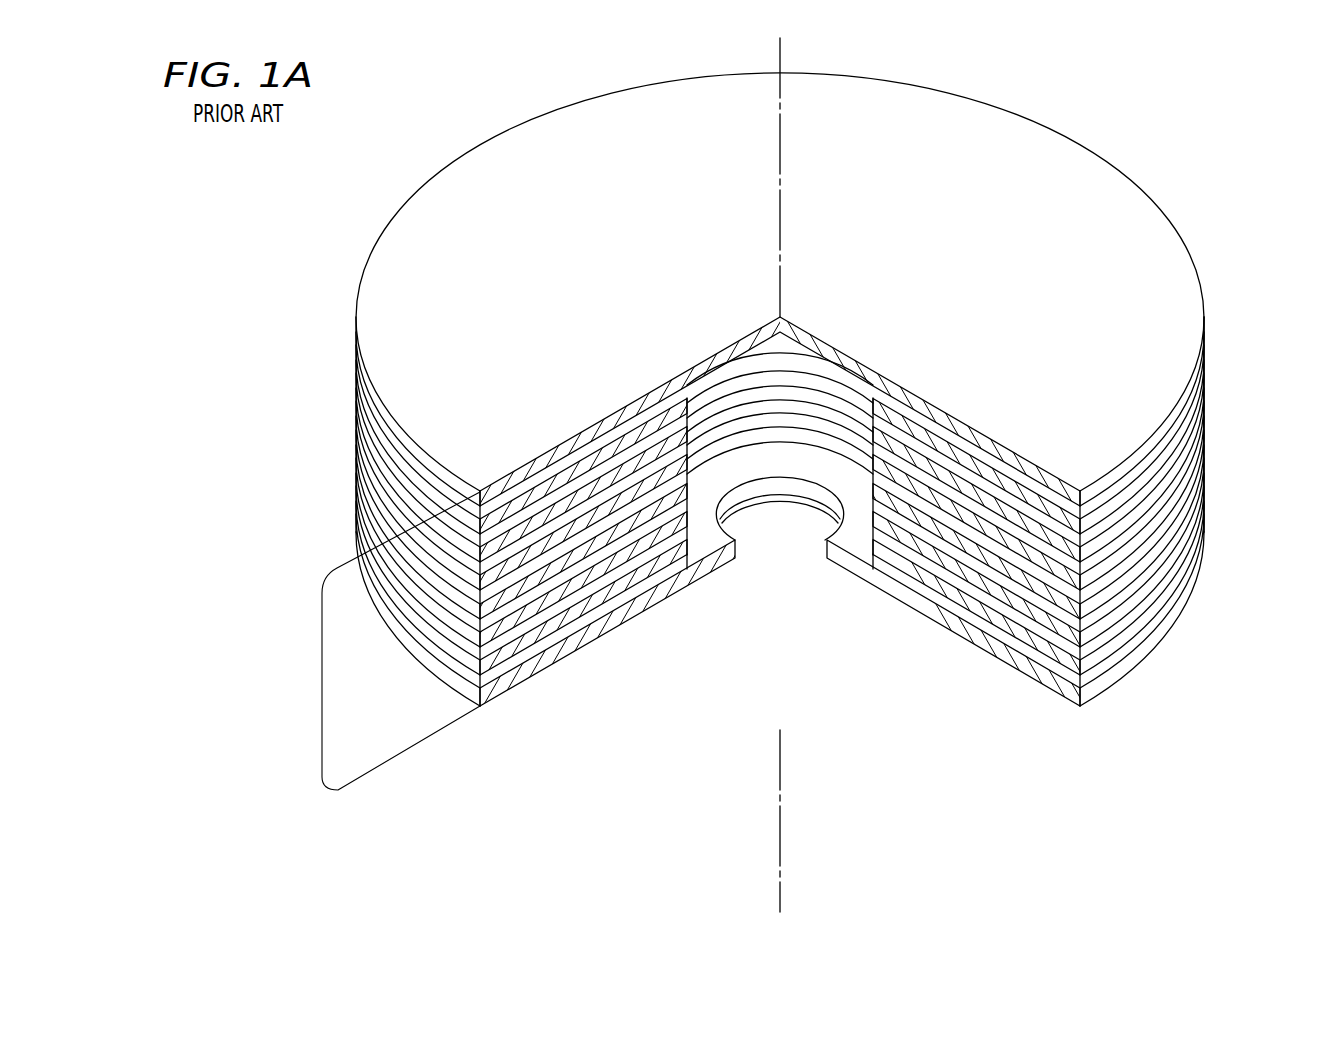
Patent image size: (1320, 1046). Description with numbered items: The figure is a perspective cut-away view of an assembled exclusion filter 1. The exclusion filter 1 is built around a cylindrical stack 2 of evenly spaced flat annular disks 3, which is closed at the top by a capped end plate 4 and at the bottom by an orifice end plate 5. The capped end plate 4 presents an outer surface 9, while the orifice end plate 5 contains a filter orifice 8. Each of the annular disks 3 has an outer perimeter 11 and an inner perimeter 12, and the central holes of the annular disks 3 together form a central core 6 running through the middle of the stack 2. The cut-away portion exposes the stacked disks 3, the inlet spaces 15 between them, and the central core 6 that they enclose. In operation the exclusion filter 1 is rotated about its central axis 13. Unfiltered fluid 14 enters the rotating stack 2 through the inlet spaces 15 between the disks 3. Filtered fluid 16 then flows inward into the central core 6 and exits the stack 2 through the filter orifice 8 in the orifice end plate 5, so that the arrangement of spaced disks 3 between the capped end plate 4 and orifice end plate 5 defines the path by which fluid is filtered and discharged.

The exclusion filter 1 is at (371, 641).
The cylindrical stack 2 is at (320, 688).
The annular disks 3 is at (420, 622).
The capped end plate 4 is at (1040, 464).
The orifice end plate 5 is at (1063, 700).
The central core 6 is at (738, 443).
The filter orifice 8 is at (845, 500).
The outer surface 9 is at (1003, 332).
The outer perimeter 11 is at (478, 664).
The inner perimeter 12 is at (687, 560).
The central axis 13 is at (784, 44).
The unfiltered fluid 14 is at (1213, 380).
The inlet spaces 15 is at (1085, 657).
The filtered fluid 16 is at (780, 603).